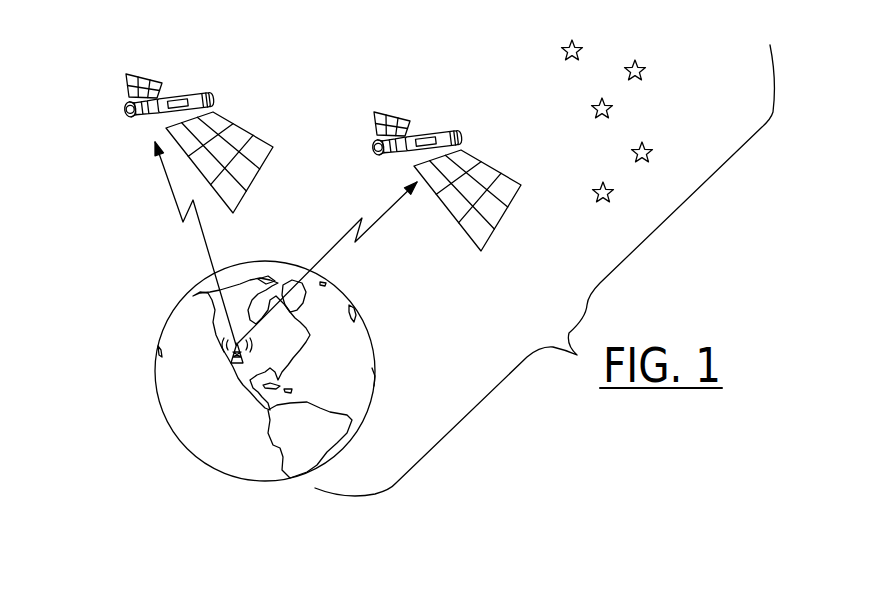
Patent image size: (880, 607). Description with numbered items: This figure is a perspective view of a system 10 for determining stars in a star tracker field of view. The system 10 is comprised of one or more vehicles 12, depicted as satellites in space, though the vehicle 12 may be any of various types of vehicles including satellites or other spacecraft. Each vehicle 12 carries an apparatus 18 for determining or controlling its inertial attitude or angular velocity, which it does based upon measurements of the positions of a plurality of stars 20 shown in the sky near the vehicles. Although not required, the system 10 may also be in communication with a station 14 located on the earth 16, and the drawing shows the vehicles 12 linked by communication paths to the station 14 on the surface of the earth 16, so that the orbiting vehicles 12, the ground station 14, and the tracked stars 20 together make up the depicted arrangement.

The system 10 is at (330, 75).
The vehicle 12 is at (213, 92).
The station 14 is at (210, 362).
The earth 16 is at (380, 358).
The apparatus 18 is at (183, 97).
The stars 20 is at (686, 118).